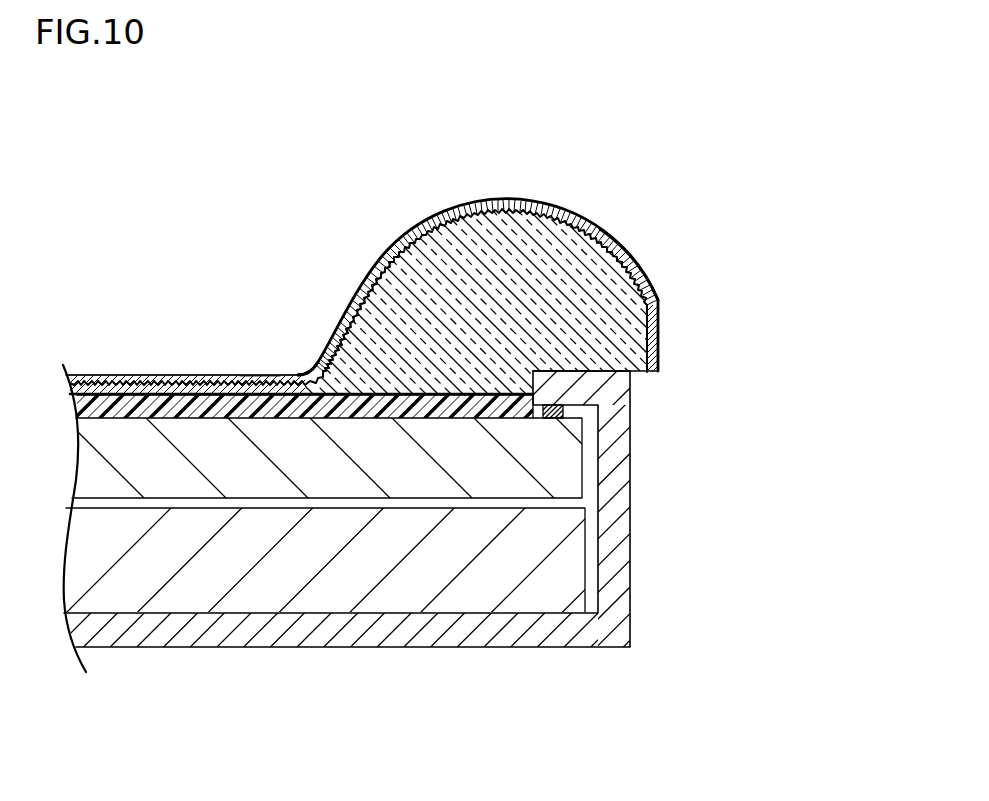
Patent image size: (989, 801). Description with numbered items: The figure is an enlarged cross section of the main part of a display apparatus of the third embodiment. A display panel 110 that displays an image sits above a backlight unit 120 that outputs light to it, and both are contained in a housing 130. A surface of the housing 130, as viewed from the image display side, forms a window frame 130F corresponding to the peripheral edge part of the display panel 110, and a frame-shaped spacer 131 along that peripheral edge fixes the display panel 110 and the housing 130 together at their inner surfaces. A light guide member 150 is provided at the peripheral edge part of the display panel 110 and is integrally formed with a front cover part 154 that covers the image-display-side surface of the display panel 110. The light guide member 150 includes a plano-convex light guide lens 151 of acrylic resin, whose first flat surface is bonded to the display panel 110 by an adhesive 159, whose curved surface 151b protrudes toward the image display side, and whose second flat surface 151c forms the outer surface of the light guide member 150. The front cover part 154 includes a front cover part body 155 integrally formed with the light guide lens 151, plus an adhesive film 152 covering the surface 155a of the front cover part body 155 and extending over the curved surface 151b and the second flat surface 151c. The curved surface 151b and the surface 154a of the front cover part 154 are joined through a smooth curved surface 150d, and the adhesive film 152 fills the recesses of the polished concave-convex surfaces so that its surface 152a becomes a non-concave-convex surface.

The display panel 110 is at (130, 462).
The backlight unit 120 is at (252, 587).
The housing 130 is at (335, 625).
The window frame 130F is at (565, 392).
The spacer 131 is at (552, 413).
The light guide member 150 is at (597, 125).
The smooth curved surface 150d is at (307, 368).
The light guide lens 151 is at (513, 293).
The curved surface 151b is at (408, 242).
The second flat surface 151c is at (658, 340).
The adhesive film 152 is at (540, 210).
The surface of the adhesive film 152a is at (612, 238).
The front cover part 154 is at (183, 243).
The surface of the front cover part 154a is at (205, 377).
The front cover part body 155 is at (117, 382).
The surface of the front cover part body 155a is at (258, 377).
The adhesive 159 is at (445, 408).